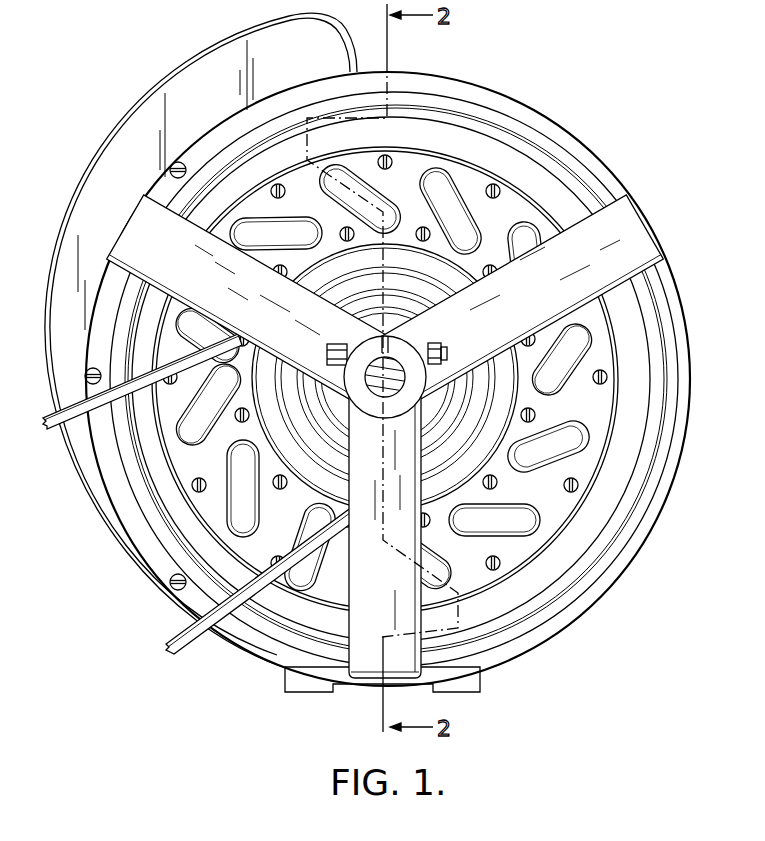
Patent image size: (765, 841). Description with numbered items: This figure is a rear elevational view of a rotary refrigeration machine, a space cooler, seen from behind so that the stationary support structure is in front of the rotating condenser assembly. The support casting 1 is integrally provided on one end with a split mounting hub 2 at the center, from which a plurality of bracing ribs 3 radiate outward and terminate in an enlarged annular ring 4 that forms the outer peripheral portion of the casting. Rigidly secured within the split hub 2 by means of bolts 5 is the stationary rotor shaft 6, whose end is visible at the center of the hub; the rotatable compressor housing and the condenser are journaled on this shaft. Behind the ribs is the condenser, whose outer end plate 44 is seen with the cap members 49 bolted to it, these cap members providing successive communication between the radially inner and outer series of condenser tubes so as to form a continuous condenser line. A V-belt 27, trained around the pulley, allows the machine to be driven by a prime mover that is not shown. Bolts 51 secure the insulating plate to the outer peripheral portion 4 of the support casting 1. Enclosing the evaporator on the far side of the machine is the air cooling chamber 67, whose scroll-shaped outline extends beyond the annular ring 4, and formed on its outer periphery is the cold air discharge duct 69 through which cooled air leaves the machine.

The support casting 1 is at (285, 685).
The split mounting hub 2 is at (362, 345).
The bracing ribs 3 is at (297, 300).
The annular ring 4 is at (497, 104).
The bolts 5 is at (452, 356).
The stationary rotor shaft 6 is at (372, 375).
The V-belt 27 is at (183, 634).
The outer end plate 44 is at (516, 202).
The cap members 49 is at (556, 497).
The bolts 51 is at (170, 170).
The air cooling chamber 67 is at (78, 211).
The cold air discharge duct 69 is at (300, 35).